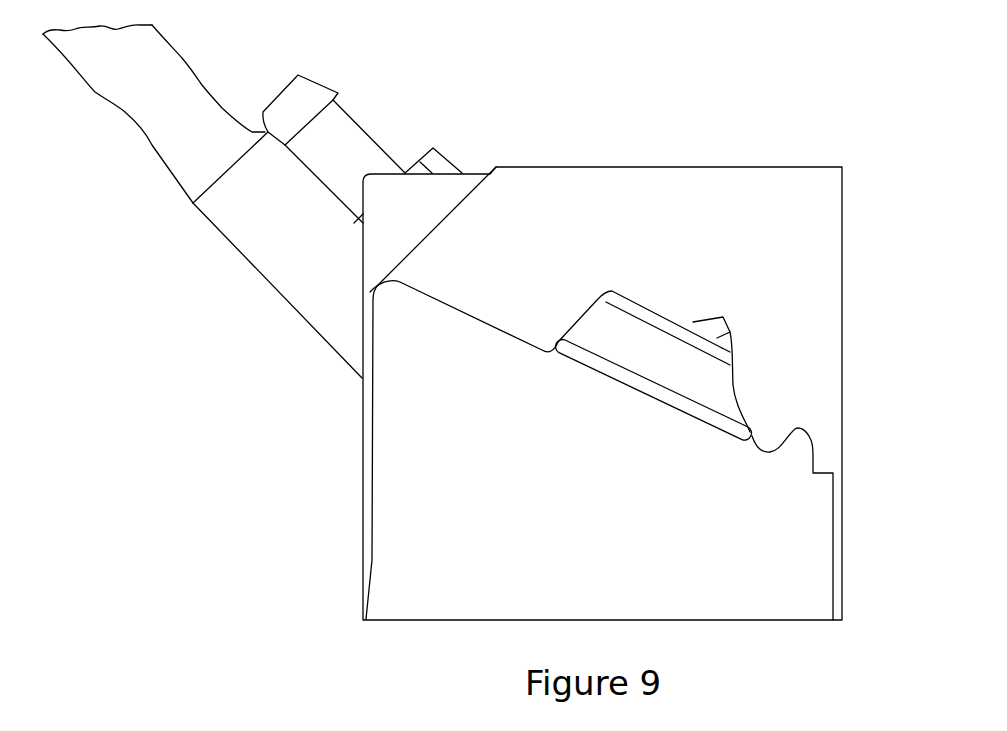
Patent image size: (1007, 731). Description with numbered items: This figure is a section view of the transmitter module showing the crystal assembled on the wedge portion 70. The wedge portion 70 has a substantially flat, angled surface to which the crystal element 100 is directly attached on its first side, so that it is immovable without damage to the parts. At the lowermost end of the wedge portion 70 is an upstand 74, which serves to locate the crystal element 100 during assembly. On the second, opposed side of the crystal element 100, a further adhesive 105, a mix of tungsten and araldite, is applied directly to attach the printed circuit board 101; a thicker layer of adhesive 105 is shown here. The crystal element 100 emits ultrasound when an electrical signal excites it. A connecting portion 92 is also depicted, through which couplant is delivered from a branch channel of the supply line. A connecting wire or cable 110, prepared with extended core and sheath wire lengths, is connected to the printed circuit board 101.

The wedge portion 70 is at (403, 492).
The upstand 74 is at (800, 443).
The connecting portion 92 is at (342, 132).
The crystal element 100 is at (685, 408).
The printed circuit board 101 is at (663, 322).
The further adhesive 105 is at (678, 358).
The connecting wire or cable 110 is at (272, 232).